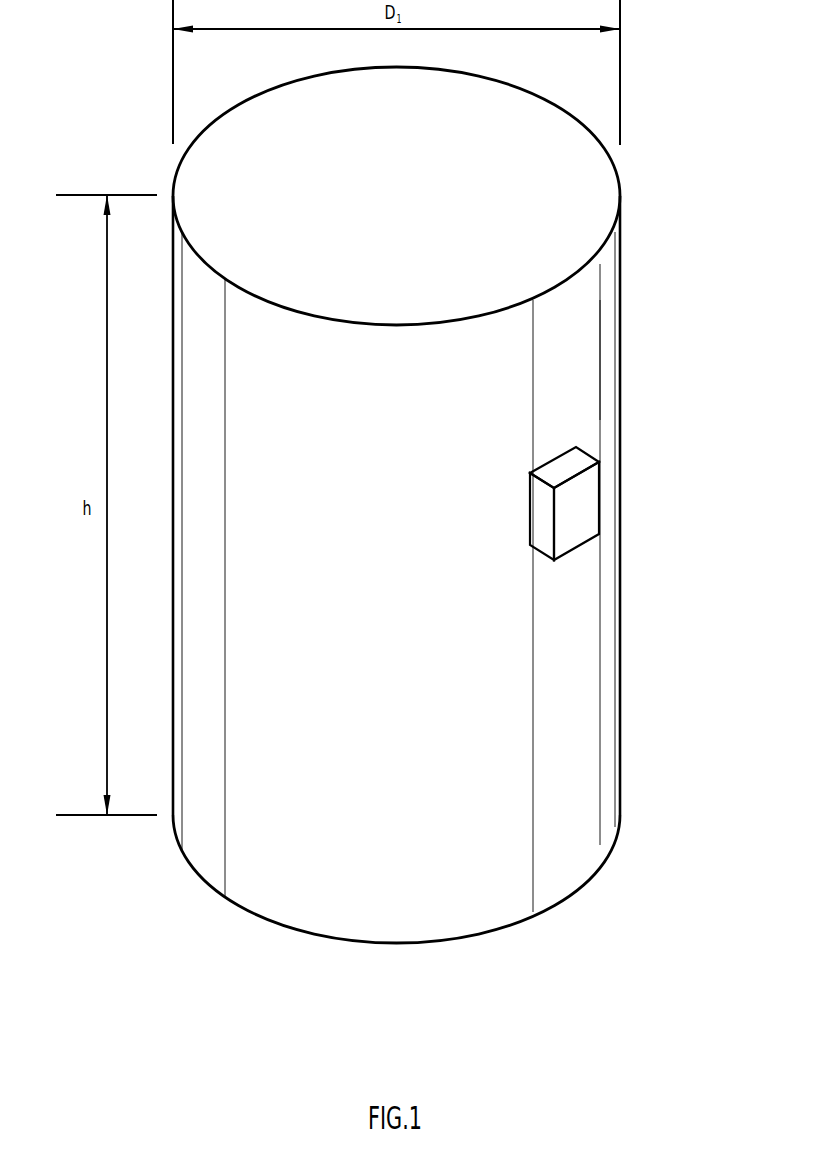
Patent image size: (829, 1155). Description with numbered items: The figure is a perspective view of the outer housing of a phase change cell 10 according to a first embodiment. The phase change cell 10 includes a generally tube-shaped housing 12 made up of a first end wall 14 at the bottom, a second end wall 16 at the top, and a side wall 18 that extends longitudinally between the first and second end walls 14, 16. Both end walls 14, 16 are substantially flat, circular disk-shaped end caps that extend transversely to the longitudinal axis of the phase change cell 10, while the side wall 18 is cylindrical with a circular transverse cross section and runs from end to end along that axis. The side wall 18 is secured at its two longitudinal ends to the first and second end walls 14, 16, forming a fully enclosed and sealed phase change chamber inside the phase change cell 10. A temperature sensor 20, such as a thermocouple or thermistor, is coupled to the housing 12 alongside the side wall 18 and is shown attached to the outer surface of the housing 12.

The phase change cell 10 is at (470, 508).
The housing 12 is at (316, 419).
The first end wall 14 is at (557, 907).
The second end wall 16 is at (515, 123).
The side wall 18 is at (607, 355).
The temperature sensor 20 is at (583, 507).